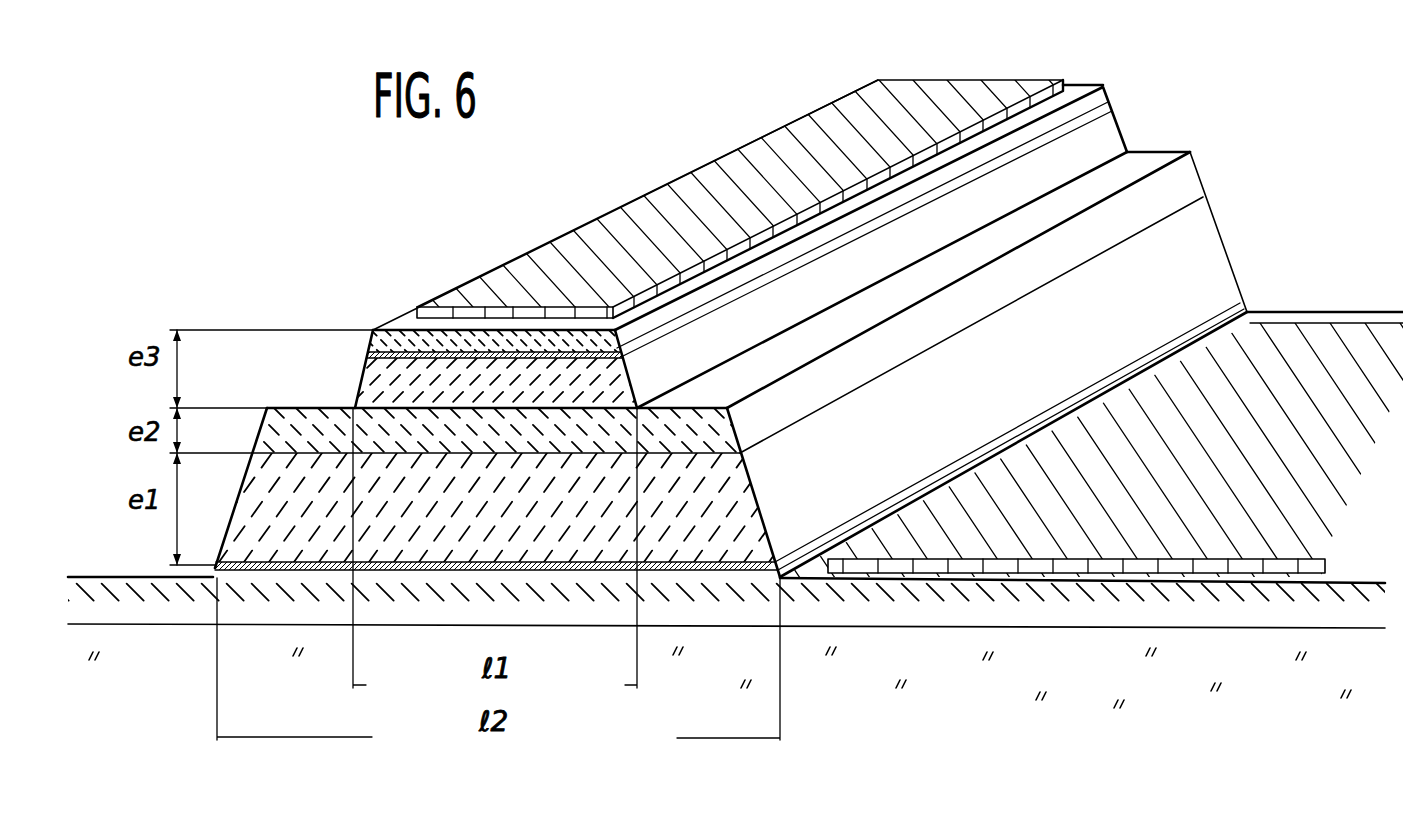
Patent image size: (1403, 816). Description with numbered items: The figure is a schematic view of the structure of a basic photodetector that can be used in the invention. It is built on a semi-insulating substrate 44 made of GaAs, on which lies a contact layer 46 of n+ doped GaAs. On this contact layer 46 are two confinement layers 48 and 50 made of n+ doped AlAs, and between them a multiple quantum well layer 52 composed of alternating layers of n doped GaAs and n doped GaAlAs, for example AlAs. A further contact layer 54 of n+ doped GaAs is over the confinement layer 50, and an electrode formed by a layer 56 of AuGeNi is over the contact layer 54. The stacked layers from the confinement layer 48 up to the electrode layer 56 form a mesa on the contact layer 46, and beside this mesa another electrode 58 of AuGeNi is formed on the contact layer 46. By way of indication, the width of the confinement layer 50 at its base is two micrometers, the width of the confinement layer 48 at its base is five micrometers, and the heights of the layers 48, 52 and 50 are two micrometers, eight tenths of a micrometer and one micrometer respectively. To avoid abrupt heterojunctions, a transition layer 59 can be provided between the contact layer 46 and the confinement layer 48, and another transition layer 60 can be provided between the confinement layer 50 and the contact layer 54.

The semi-insulating substrate 44 is at (992, 712).
The contact layer 46 is at (152, 606).
The confinement layer 48 is at (250, 508).
The confinement layer 50 is at (378, 387).
The multiple quantum well layer 52 is at (270, 444).
The contact layer 54 is at (375, 331).
The electrode layer 56 is at (946, 92).
The electrode 58 is at (1345, 330).
The transition layer 59 is at (763, 557).
The transition layer 60 is at (623, 357).